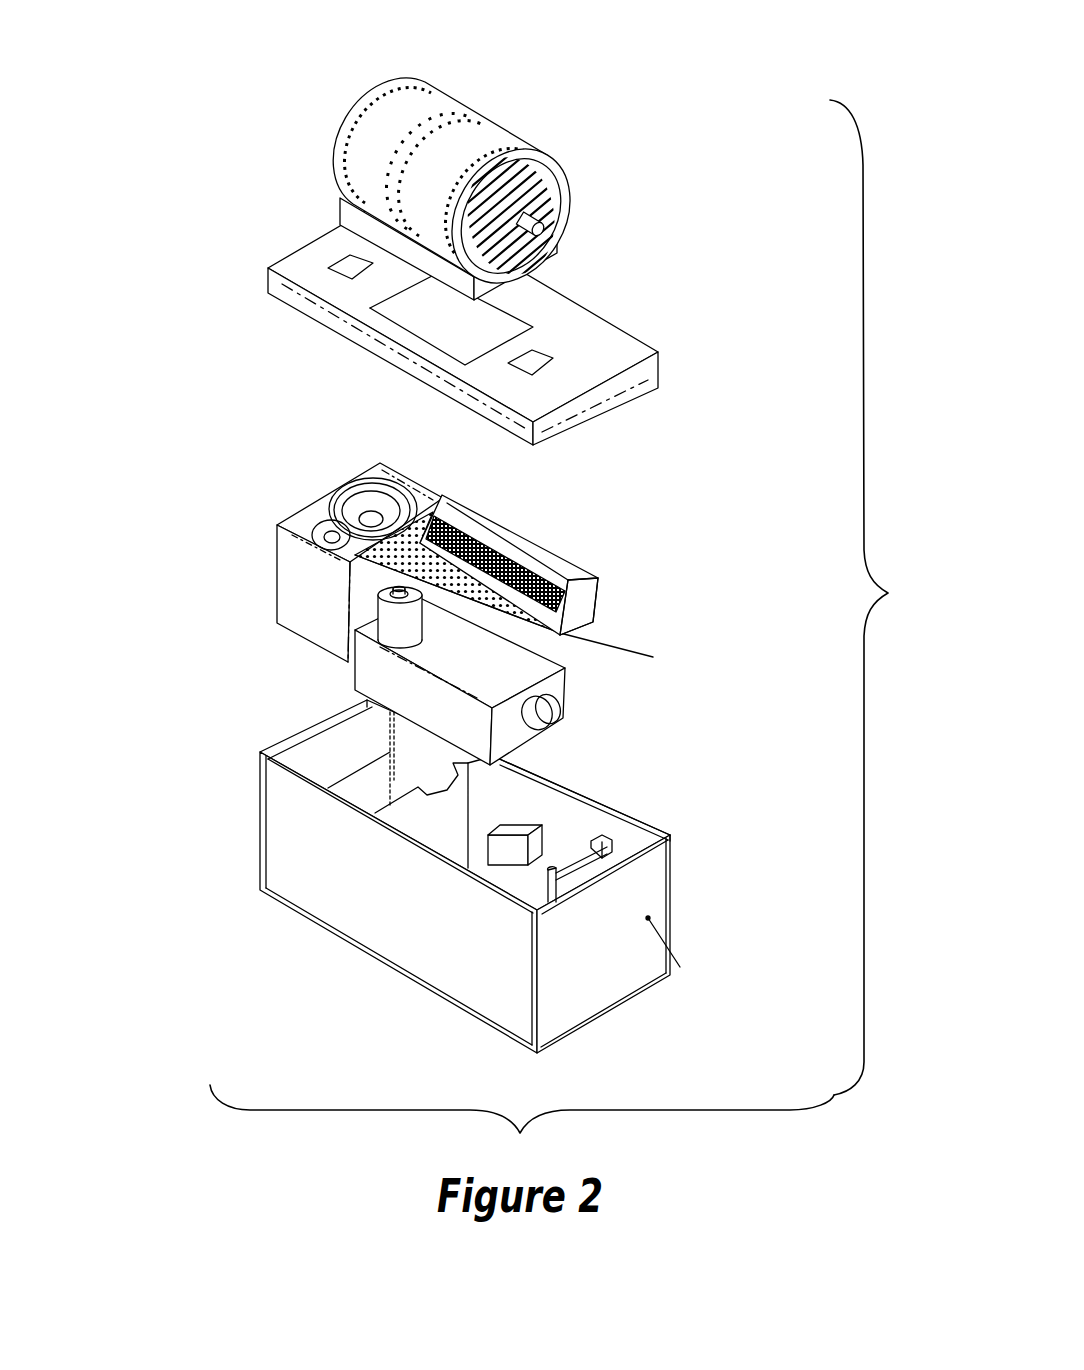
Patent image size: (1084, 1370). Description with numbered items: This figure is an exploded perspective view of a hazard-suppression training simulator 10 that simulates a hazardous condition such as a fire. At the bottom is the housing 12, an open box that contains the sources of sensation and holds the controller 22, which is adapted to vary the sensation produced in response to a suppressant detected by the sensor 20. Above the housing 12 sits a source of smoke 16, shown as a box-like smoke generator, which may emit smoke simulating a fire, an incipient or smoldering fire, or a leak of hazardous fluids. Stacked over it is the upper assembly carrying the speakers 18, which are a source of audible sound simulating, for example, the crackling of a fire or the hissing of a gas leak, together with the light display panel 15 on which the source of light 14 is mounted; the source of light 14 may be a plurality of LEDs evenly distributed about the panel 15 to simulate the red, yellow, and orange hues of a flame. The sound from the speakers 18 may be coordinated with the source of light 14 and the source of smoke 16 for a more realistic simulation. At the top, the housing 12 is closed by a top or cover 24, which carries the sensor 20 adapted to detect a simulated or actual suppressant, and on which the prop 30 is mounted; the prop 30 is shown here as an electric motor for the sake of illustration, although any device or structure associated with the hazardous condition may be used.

The hazard-suppression training simulator 10 is at (180, 190).
The housing 12 is at (397, 898).
The source of light 14 is at (590, 593).
The light display panel 15 is at (517, 532).
The source of smoke 16 is at (510, 732).
The speakers 18 is at (292, 553).
The sensor 20 is at (347, 260).
The controller 22 is at (528, 845).
The top or cover 24 is at (587, 335).
The prop 30 is at (441, 111).